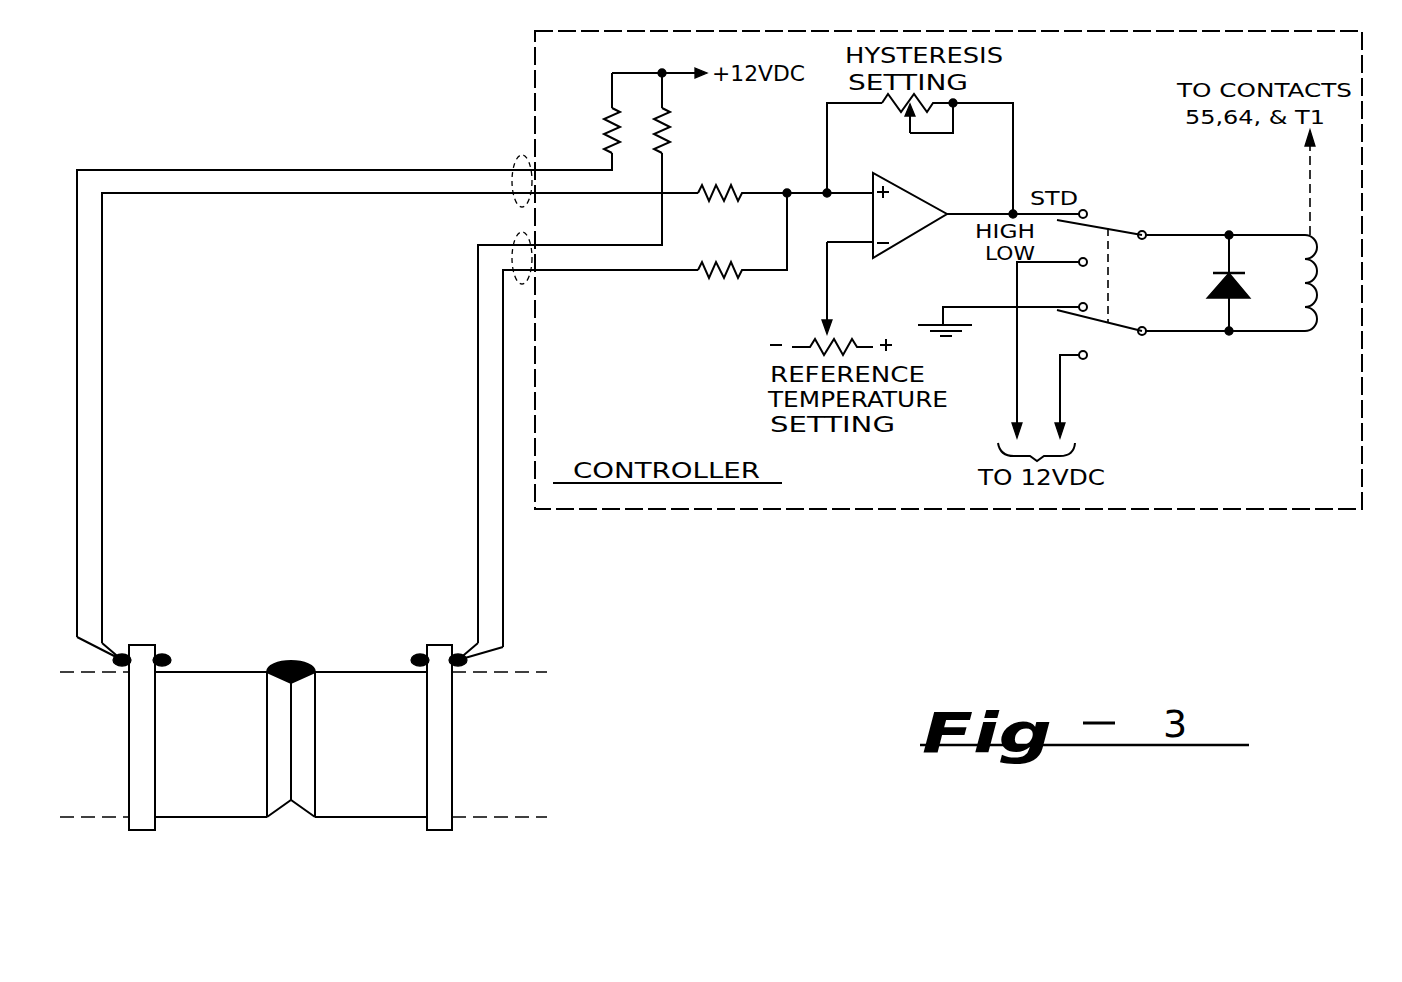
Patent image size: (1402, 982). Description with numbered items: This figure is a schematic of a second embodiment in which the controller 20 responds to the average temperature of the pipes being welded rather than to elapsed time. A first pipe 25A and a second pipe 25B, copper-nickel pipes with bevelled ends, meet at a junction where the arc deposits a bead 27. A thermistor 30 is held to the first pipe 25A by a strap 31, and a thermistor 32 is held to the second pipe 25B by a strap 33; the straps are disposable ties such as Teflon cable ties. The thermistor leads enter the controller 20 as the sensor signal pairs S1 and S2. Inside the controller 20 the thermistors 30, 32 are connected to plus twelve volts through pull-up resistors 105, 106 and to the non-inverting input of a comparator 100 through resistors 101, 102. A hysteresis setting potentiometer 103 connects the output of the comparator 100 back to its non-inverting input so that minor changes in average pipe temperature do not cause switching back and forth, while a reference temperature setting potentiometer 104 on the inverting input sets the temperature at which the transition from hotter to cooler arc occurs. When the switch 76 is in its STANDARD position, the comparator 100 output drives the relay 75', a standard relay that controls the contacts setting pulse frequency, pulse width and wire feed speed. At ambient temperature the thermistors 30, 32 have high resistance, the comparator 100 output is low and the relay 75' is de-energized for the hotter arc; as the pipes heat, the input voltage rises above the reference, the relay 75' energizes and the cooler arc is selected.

The controller 20 is at (730, 512).
The first pipe 25A is at (228, 817).
The second pipe 25B is at (375, 817).
The bead 27 is at (308, 668).
The thermistor 30 is at (166, 656).
The strap 31 is at (142, 830).
The thermistor 32 is at (420, 652).
The strap 33 is at (440, 830).
The relay 75' is at (1306, 299).
The switch 76 is at (1103, 224).
The comparator 100 is at (886, 246).
The resistor 101 is at (731, 188).
The resistor 102 is at (738, 268).
The hysteresis setting potentiometer 103 is at (892, 109).
The reference temperature setting potentiometer 104 is at (840, 319).
The pull-up resistor 105 is at (610, 136).
The pull-up resistor 106 is at (668, 130).
The first sensor signal S1 is at (512, 166).
The second sensor signal S2 is at (512, 243).